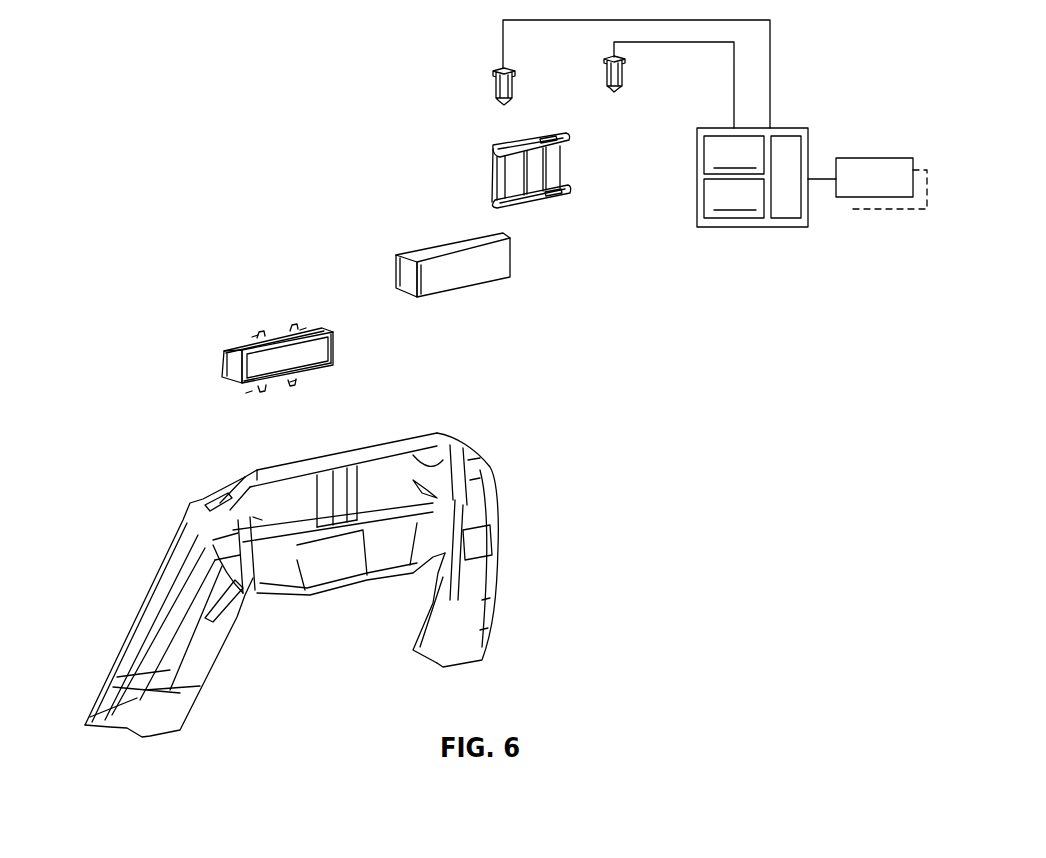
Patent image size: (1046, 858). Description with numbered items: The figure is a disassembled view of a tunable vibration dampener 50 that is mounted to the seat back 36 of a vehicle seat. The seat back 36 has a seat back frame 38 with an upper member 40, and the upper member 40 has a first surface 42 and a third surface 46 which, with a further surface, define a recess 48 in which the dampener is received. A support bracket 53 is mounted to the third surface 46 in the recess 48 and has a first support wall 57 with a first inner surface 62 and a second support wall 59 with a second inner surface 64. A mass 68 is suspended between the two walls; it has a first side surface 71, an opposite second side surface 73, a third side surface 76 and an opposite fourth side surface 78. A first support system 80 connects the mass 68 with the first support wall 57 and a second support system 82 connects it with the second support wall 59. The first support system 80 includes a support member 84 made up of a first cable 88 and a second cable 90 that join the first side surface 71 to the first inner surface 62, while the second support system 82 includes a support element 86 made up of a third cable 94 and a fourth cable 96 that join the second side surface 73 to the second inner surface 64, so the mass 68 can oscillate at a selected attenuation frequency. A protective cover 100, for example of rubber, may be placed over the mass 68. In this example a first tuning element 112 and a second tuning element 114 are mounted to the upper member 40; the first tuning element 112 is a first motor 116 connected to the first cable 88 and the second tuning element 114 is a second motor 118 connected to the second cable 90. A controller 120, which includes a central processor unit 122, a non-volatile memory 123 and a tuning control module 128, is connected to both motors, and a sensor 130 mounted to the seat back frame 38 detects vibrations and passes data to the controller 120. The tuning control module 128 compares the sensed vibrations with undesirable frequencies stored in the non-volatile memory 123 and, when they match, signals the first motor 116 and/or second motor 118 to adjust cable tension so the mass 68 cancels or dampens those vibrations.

The seat back 36 is at (312, 554).
The seat back frame 38 is at (142, 615).
The upper member 40 is at (408, 434).
The first surface 42 is at (463, 445).
The third surface 46 is at (253, 517).
The recess 48 is at (423, 486).
The tunable vibration dampener 50 is at (396, 288).
The support bracket 53 is at (521, 174).
The first support wall 57 is at (495, 147).
The second support wall 59 is at (494, 203).
The first inner surface 62 is at (565, 145).
The second inner surface 64 is at (565, 185).
The mass 68 is at (307, 358).
The first side surface 71 is at (228, 348).
The second side surface 73 is at (317, 370).
The third side surface 76 is at (228, 372).
The fourth side surface 78 is at (340, 358).
The first support system 80 is at (255, 335).
The second support system 82 is at (248, 393).
The support member 84 is at (305, 328).
The support element 86 is at (290, 388).
The first cable 88 is at (259, 335).
The second cable 90 is at (292, 328).
The third cable 94 is at (261, 392).
The fourth cable 96 is at (295, 383).
The protective cover 100 is at (470, 273).
The first tuning element 112 is at (585, 73).
The second tuning element 114 is at (626, 98).
The first motor 116 is at (495, 80).
The second motor 118 is at (605, 72).
The controller 120 is at (778, 169).
The central processor unit 122 is at (734, 155).
The non-volatile memory 123 is at (734, 198).
The tuning control module 128 is at (787, 146).
The sensor 130 is at (876, 158).